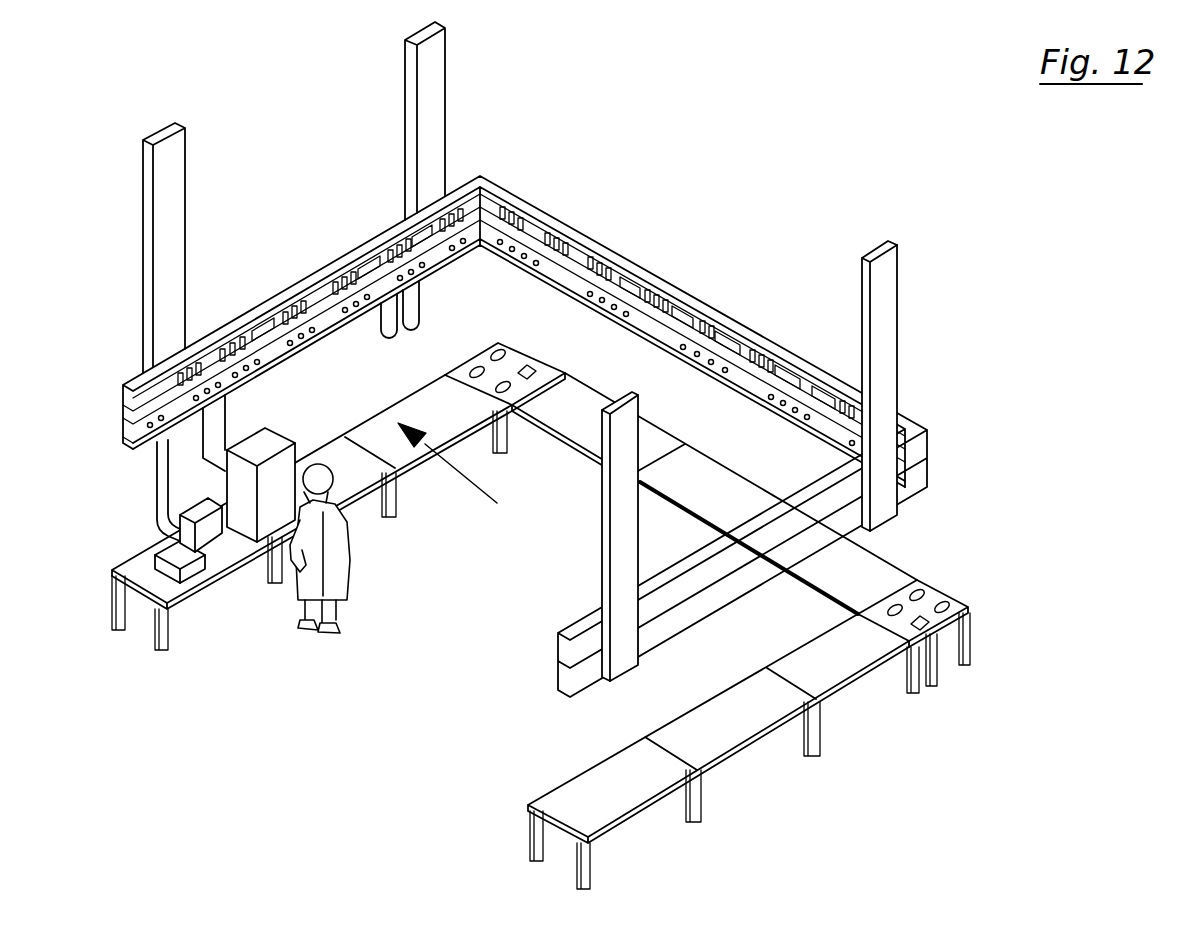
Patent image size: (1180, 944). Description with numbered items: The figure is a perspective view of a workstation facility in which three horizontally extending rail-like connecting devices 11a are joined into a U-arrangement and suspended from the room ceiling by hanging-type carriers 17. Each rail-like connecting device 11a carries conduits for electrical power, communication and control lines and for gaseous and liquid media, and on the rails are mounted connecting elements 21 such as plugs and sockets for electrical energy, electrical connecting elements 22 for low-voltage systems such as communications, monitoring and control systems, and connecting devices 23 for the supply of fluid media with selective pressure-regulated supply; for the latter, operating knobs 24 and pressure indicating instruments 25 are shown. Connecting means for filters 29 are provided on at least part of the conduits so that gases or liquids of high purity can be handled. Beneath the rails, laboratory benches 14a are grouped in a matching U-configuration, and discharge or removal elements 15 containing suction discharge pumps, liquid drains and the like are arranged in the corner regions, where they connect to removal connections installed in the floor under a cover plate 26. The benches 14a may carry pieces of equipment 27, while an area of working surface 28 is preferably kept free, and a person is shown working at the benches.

The rail-like connecting device 11a is at (915, 452).
The laboratory bench 14a is at (608, 780).
The discharge or removal element 15 is at (950, 598).
The carrier 17 is at (877, 313).
The connecting element 21 is at (217, 347).
The electrical connecting element 22 is at (375, 260).
The connecting device for fluid media 23 is at (310, 335).
The operating knob 24 is at (132, 398).
The pressure indicating instrument 25 is at (165, 443).
The cover plate 26 is at (942, 652).
The piece of equipment 27 is at (260, 513).
The working surface area 28 is at (463, 474).
The filter 29 is at (396, 324).